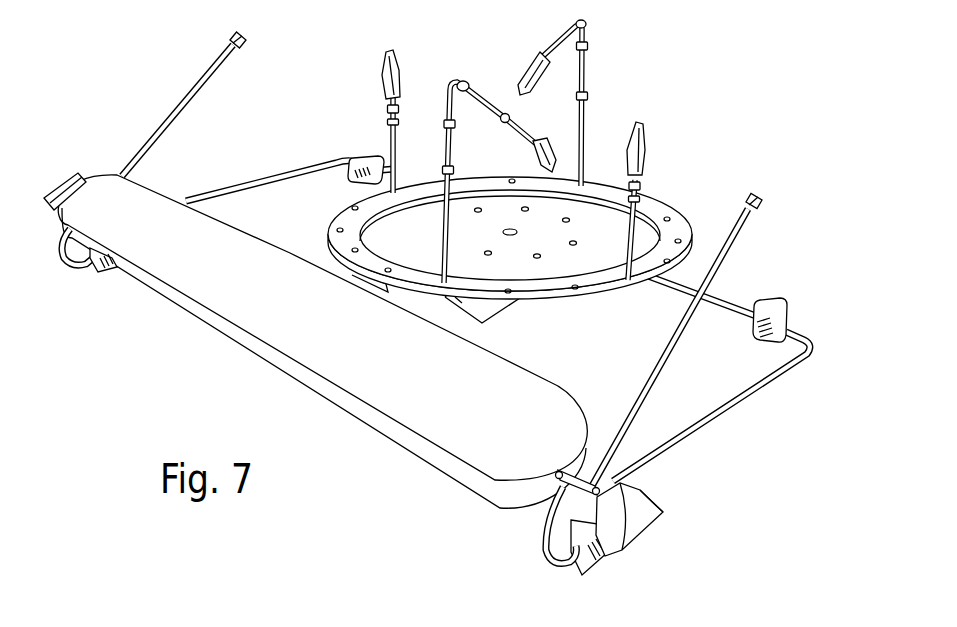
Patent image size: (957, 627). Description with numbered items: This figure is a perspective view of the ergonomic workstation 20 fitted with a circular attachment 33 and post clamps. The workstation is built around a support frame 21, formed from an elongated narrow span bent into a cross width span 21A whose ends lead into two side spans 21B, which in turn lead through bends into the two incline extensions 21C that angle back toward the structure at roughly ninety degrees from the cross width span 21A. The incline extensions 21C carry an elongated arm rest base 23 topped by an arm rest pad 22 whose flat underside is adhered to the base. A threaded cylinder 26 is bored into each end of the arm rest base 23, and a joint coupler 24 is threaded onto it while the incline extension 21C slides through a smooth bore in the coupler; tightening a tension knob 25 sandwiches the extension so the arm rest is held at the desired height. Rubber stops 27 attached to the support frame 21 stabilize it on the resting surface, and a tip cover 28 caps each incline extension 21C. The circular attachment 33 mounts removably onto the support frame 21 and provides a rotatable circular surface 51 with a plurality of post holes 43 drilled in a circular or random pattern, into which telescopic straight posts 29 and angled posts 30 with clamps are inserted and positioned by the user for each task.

The ergonomic workstation 20 is at (322, 341).
The support frame 21 is at (479, 257).
The cross width span 21A is at (725, 302).
The side spans 21B is at (277, 175).
The incline extensions 21C is at (185, 102).
The arm rest pad 22 is at (417, 390).
The arm rest base 23 is at (317, 380).
The joint coupler 24 is at (555, 489).
The tension knob 25 is at (62, 193).
The threaded cylinder 26 is at (553, 480).
The rubber stop 27 is at (367, 157).
The tip cover 28 is at (247, 43).
The straight post 29 is at (396, 142).
The angled post 30 is at (450, 200).
The circular attachment 33 is at (318, 223).
The post holes 43 is at (575, 290).
The circular surface 51 is at (655, 213).